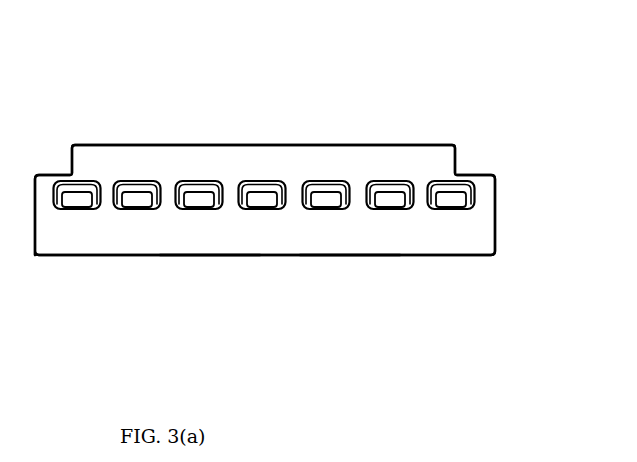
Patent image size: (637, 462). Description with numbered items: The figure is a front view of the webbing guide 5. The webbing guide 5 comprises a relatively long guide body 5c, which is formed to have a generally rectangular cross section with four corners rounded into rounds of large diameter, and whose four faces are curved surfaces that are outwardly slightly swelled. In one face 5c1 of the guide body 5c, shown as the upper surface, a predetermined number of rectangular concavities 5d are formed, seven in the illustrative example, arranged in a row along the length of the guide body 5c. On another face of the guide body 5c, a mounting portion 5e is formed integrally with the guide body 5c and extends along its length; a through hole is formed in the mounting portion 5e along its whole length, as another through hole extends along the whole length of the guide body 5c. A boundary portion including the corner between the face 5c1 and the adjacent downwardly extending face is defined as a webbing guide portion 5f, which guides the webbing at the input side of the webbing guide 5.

The webbing guide 5 is at (480, 137).
The guide body 5c is at (470, 232).
The face of the guide body 5c1 is at (343, 248).
The rectangular concavities 5d is at (199, 206).
The mounting portion 5e is at (333, 163).
The webbing guide portion 5f is at (212, 248).